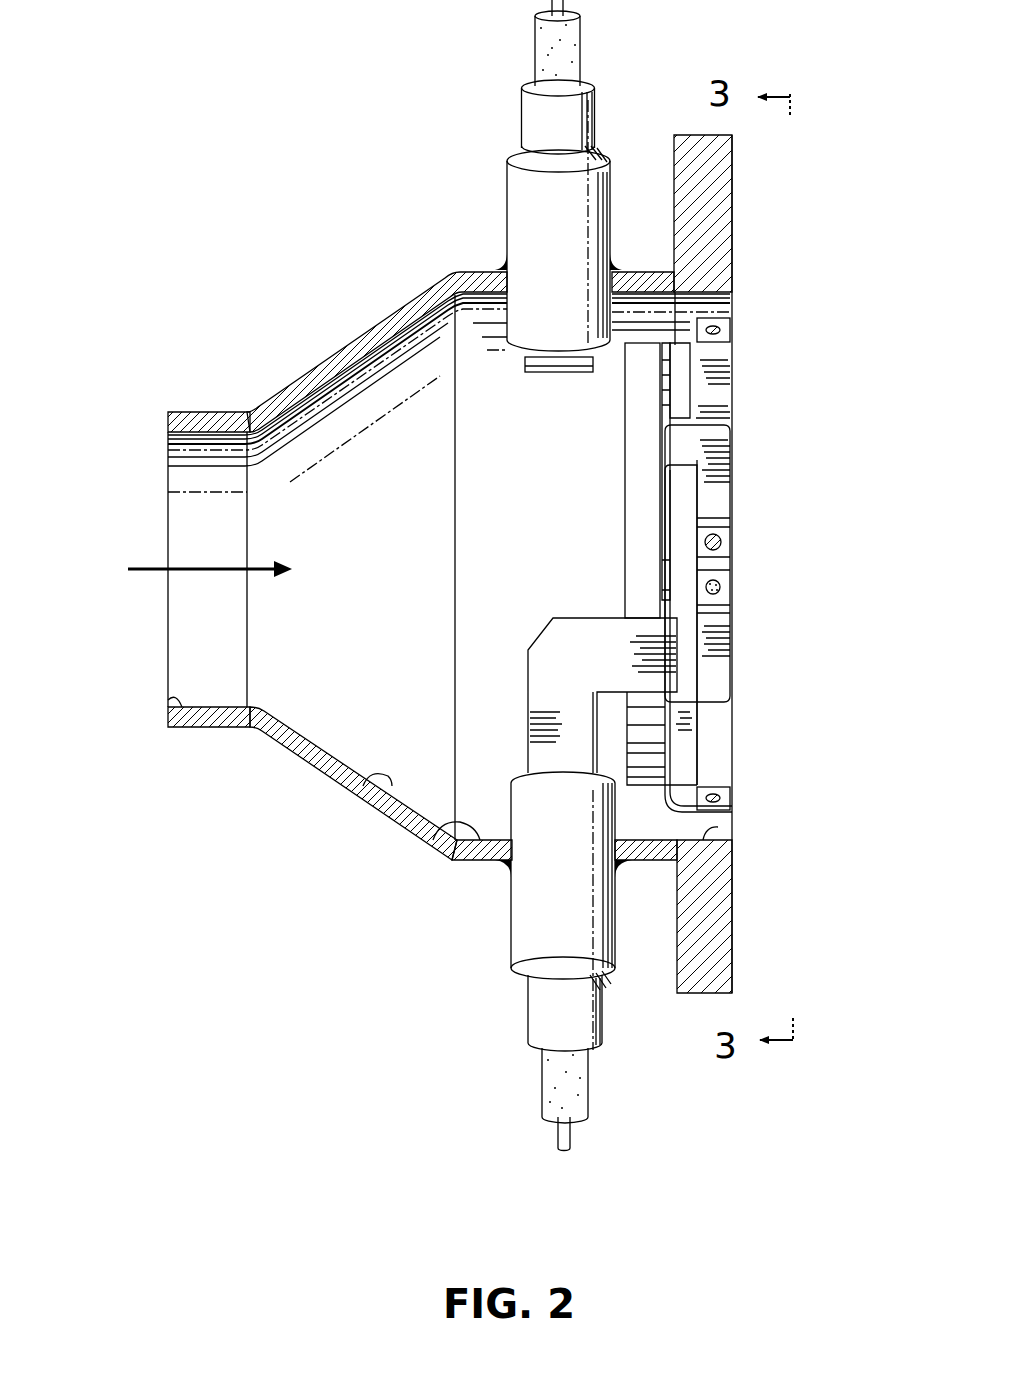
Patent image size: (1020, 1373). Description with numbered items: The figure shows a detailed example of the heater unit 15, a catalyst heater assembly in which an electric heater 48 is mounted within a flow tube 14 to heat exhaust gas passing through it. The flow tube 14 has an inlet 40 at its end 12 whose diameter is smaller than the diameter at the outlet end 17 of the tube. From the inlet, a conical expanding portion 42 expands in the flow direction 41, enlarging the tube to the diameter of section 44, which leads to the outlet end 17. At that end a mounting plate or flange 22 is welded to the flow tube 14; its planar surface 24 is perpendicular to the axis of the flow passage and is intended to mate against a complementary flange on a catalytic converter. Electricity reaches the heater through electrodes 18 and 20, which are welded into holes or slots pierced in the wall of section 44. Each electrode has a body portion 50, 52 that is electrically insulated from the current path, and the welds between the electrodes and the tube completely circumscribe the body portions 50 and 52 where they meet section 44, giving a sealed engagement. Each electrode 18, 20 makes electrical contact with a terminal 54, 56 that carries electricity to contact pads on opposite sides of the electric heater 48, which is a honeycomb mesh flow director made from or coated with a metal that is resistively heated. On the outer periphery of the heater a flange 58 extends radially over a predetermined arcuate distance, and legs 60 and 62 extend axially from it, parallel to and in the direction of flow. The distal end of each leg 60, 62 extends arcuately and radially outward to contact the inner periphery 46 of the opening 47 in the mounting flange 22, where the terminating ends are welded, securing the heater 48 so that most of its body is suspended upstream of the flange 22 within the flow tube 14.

The end 12 is at (194, 412).
The flow tube 14 is at (301, 370).
The heater assembly 15 is at (345, 310).
The second end 17 is at (645, 268).
The electrode 18 is at (516, 175).
The electrode 20 is at (516, 961).
The mounting plate or flange 22 is at (680, 134).
The planar surface 24 is at (733, 182).
The inlet 40 is at (168, 700).
The flow direction 41 is at (141, 572).
The conical expanding portion 42 is at (380, 783).
The section 44 is at (470, 824).
The inner periphery 46 is at (718, 827).
The opening 47 is at (722, 760).
The electric heater 48 is at (736, 727).
The body portion 50 is at (522, 218).
The body portion 52 is at (522, 910).
The terminal 54 is at (548, 374).
The terminal 56 is at (540, 657).
The flange 58 is at (632, 528).
The leg 60 is at (722, 492).
The leg 62 is at (722, 620).